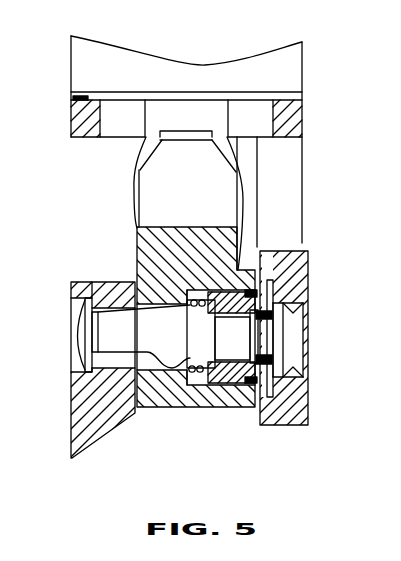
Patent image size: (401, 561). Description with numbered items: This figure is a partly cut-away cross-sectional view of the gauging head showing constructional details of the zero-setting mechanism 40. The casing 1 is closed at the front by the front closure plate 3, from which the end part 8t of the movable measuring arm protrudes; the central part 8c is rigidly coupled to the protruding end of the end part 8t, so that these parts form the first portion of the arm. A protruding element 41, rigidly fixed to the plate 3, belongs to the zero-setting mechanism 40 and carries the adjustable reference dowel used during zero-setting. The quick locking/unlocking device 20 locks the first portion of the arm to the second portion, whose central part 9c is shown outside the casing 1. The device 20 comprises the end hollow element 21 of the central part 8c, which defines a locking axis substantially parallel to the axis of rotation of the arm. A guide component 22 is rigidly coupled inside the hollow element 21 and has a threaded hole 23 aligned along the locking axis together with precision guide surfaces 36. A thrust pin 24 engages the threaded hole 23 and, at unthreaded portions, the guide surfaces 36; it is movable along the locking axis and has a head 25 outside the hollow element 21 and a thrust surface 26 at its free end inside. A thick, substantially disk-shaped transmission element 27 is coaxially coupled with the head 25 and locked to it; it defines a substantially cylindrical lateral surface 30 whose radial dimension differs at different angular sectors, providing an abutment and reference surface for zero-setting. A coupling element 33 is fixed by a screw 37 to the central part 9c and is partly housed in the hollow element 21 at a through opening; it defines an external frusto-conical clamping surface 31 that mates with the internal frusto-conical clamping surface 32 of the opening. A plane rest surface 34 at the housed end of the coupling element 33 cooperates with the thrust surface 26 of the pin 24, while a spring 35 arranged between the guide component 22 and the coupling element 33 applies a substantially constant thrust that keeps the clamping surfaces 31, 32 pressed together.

The casing 1 is at (95, 60).
The front closure plate 3 is at (72, 98).
The end part of the arm 8t is at (203, 113).
The central part of the arm 8c is at (207, 167).
The zero-setting mechanism 40 is at (118, 168).
The protruding element 41 is at (290, 170).
The guide component 22 is at (162, 228).
The lateral surface 30 is at (288, 243).
The external clamping surface 31 is at (183, 330).
The thrust surface 26 is at (160, 291).
The thrust pin 24 is at (258, 291).
The threaded hole 23 is at (245, 323).
The coupling element 33 is at (128, 330).
The plane rest surface 34 is at (205, 345).
The screw 37 is at (80, 342).
The internal clamping surface 32 is at (97, 355).
The head 25 is at (295, 353).
The central part of the arm 9c is at (125, 423).
The end hollow element 21 is at (147, 400).
The precision guide surfaces 36 is at (193, 374).
The spring 35 is at (215, 372).
The transmission element 27 is at (300, 398).
The quick locking/unlocking device 20 is at (178, 448).